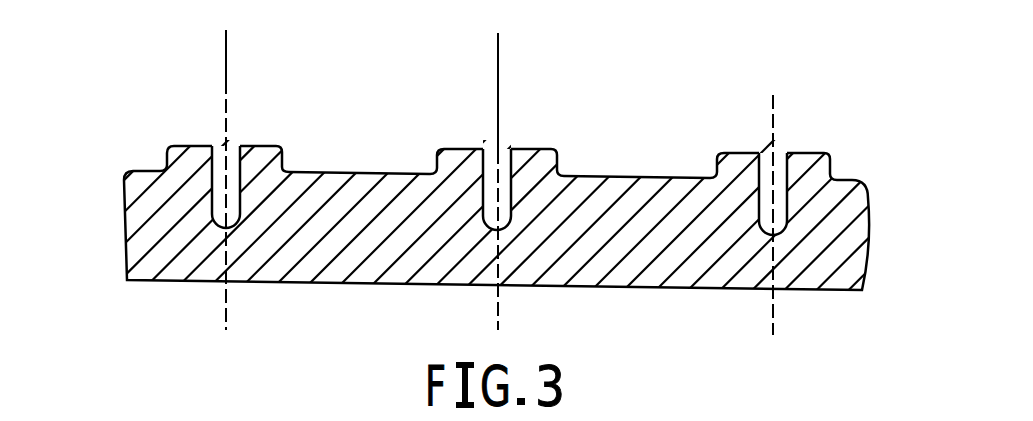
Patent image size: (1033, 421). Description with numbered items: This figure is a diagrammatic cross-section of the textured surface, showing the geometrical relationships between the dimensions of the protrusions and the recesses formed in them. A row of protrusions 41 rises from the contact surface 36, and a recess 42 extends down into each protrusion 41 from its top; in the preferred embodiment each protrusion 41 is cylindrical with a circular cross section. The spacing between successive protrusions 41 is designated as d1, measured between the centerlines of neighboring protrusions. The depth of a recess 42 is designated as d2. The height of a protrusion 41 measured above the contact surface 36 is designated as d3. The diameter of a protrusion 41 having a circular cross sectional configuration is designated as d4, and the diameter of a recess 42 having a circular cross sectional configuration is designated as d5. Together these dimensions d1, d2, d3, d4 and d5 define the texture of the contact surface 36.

The contact surface 36 is at (855, 181).
The protrusion 41 is at (546, 146).
The recess 42 is at (503, 148).
The spacing between successive protrusions d1 is at (498, 48).
The depth of a recess d2 is at (383, 230).
The height of the protrusion d3 is at (673, 225).
The diameter of a protrusion d4 is at (168, 140).
The diameter of a recess d5 is at (312, 203).